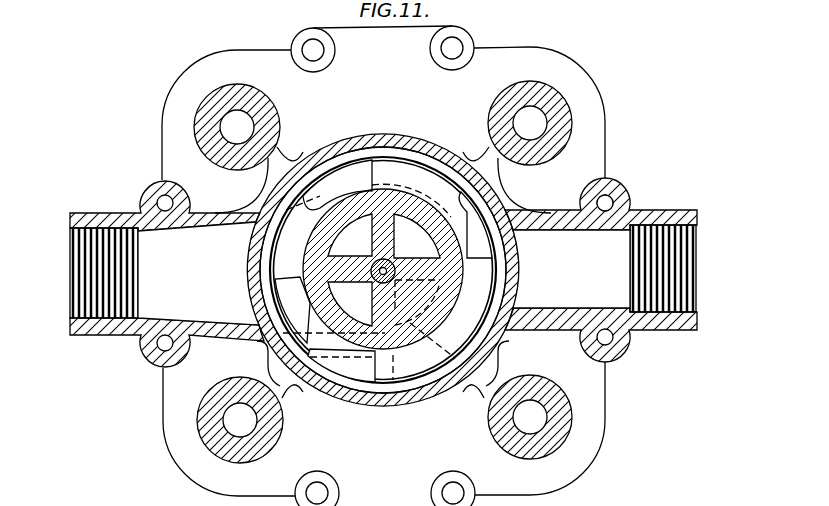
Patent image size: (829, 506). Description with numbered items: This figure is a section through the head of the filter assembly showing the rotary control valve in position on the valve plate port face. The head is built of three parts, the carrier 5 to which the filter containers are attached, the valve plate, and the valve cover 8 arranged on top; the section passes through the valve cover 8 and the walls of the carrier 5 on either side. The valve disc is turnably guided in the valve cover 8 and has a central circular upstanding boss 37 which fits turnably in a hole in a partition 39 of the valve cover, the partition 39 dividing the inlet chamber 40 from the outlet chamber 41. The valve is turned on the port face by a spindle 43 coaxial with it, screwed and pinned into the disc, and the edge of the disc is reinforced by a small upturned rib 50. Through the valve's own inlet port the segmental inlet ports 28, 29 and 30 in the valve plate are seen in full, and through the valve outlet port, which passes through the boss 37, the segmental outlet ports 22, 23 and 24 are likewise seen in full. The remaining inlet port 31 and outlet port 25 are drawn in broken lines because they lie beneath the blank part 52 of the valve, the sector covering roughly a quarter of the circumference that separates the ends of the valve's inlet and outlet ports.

The carrier 5 is at (590, 120).
The valve cover 8 is at (517, 214).
The segmental outlet port 22 is at (350, 304).
The segmental outlet port 23 is at (350, 235).
The segmental outlet port 24 is at (417, 236).
The segmental outlet port 25 is at (440, 303).
The segmental inlet port 28 is at (292, 310).
The segmental inlet port 29 is at (343, 178).
The segmental inlet port 30 is at (478, 250).
The segmental inlet port 31 is at (408, 394).
The boss 37 is at (320, 240).
The partition 39 is at (253, 283).
The inlet chamber 40 is at (571, 269).
The outlet chamber 41 is at (198, 273).
The spindle 43 is at (386, 262).
The upturned edge or rib 50 is at (500, 287).
The blank part 52 is at (465, 372).